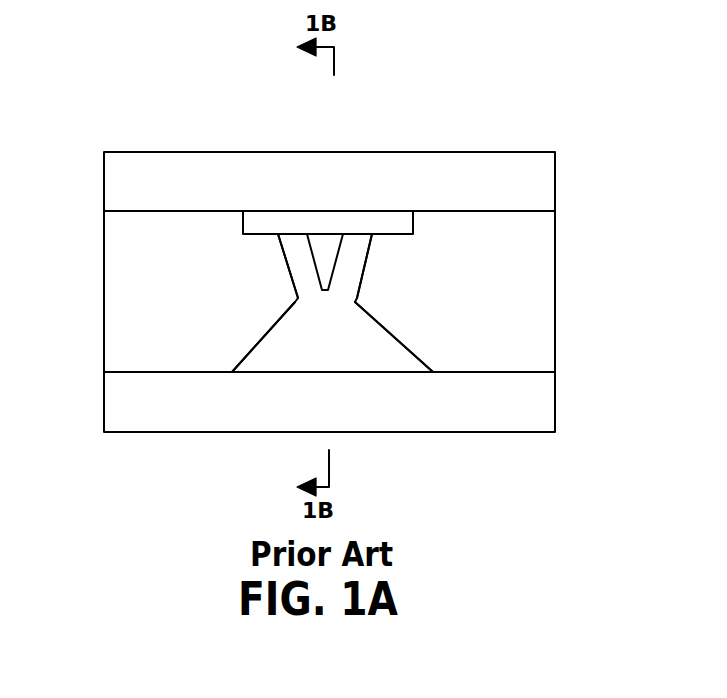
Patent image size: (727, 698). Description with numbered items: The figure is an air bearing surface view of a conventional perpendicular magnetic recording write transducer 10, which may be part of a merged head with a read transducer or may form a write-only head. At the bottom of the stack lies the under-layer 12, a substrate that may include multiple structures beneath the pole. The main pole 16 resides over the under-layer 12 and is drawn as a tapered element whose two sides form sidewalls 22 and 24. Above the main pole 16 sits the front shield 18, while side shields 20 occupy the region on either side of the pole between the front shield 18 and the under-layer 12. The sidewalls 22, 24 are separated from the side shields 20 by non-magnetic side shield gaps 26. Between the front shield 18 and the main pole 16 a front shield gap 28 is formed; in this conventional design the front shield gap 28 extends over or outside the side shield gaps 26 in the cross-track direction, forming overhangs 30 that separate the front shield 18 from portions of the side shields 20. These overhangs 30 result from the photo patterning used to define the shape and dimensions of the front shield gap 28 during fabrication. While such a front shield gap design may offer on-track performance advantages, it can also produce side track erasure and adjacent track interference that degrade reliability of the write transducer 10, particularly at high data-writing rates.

The perpendicular magnetic recording transducer 10 is at (89, 103).
The under-layer 12 is at (500, 412).
The main pole 16 is at (328, 245).
The front shield 18 is at (500, 191).
The side shields 20 is at (180, 280).
The sidewall 22 is at (313, 262).
The sidewall 24 is at (335, 262).
The side shield gaps 26 is at (310, 289).
The front shield gap 28 is at (326, 211).
The overhangs 30 is at (253, 211).